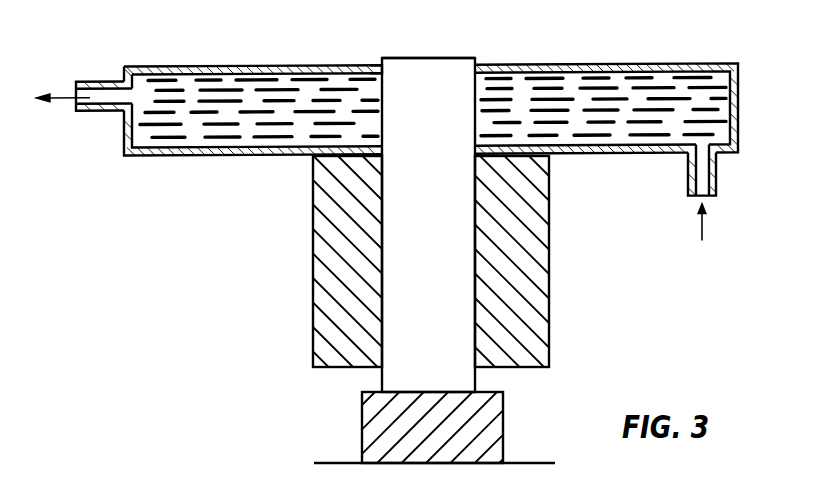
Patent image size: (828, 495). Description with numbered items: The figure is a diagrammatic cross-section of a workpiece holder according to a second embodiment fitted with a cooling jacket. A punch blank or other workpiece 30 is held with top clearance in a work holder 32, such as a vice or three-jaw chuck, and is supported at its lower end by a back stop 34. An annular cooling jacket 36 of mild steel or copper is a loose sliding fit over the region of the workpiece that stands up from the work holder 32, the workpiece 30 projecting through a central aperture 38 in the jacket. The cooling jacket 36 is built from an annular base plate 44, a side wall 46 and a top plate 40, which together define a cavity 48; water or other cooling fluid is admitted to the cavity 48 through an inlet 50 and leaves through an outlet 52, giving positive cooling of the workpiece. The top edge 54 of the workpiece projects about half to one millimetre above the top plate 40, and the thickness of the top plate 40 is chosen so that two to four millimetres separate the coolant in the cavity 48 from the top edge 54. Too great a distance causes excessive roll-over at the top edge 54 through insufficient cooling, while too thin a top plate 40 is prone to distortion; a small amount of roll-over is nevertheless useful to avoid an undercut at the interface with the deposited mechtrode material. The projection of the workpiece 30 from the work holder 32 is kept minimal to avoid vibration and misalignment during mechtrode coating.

The workpiece 30 is at (404, 238).
The work holder 32 is at (552, 345).
The back stop 34 is at (490, 412).
The cooling jacket 36 is at (628, 60).
The central aperture 38 is at (379, 65).
The top plate 40 is at (238, 66).
The annular base plate 44 is at (208, 157).
The side wall 46 is at (738, 116).
The cavity 48 is at (664, 103).
The inlet 50 is at (716, 176).
The outlet 52 is at (92, 81).
The top edge of the workpiece 54 is at (423, 58).